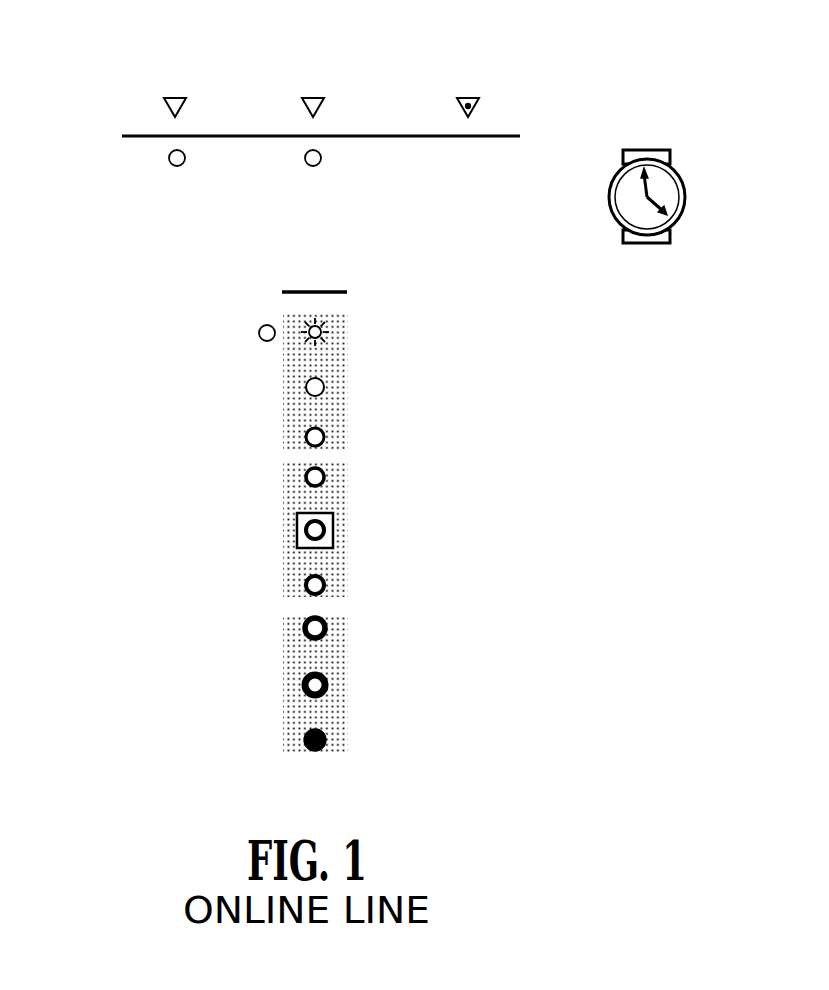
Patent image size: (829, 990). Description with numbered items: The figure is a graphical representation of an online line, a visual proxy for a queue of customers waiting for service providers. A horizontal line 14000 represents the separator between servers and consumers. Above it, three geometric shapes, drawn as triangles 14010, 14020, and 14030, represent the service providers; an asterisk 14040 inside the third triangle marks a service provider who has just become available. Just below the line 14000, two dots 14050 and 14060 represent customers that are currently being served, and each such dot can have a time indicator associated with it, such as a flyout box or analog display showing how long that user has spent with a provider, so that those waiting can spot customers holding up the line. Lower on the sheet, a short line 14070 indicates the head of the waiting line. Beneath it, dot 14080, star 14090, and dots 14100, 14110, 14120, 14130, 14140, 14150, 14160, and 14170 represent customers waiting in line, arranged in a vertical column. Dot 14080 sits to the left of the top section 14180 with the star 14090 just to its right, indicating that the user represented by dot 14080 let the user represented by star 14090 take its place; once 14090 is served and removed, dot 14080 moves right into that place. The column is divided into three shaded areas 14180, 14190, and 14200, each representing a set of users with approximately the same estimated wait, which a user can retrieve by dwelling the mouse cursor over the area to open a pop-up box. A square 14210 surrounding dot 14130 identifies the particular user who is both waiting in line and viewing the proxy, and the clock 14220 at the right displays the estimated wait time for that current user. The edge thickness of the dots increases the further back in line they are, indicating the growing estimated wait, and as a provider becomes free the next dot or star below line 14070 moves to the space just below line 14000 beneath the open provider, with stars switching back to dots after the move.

The line 14000 is at (139, 136).
The geometric shape (triangle) 14010 is at (175, 97).
The geometric shape (triangle) 14020 is at (313, 97).
The geometric shape (triangle) 14030 is at (470, 97).
The asterisk 14040 is at (472, 106).
The dot 14050 is at (171, 165).
The dot 14060 is at (307, 166).
The line 14070 is at (290, 291).
The dot 14080 is at (258, 330).
The star 14090 is at (323, 335).
The dot 14100 is at (305, 385).
The dot 14110 is at (305, 435).
The dot 14120 is at (305, 478).
The dot 14130 is at (297, 528).
The dot 14140 is at (305, 585).
The dot 14150 is at (305, 628).
The dot 14160 is at (305, 685).
The dot 14170 is at (305, 740).
The shaded area (top section) 14180 is at (350, 361).
The shaded area 14190 is at (348, 488).
The shaded area 14200 is at (348, 658).
The square 14210 is at (333, 523).
The clock 14220 is at (648, 244).